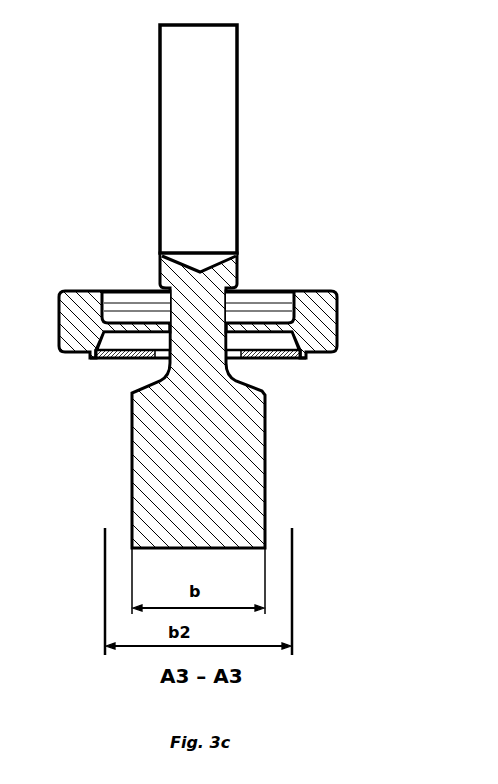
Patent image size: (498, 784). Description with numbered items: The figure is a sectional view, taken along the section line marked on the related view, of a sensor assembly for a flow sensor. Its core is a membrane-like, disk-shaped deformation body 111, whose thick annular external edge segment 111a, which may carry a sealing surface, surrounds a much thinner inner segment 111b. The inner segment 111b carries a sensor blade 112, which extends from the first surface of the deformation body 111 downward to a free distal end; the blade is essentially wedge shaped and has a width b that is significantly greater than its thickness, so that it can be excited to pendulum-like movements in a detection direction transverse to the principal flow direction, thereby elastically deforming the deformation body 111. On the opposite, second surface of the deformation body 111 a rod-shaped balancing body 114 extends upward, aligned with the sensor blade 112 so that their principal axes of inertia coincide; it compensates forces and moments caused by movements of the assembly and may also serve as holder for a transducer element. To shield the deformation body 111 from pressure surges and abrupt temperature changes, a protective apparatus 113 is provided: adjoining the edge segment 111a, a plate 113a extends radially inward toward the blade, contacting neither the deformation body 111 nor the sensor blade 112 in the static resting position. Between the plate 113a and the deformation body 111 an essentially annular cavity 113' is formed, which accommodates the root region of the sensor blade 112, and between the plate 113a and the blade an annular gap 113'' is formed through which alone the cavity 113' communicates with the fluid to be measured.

The balancing body 114 is at (140, 115).
The deformation body 111 is at (207, 321).
The external edge segment 111a is at (72, 300).
The inner segment 111b is at (127, 323).
The sensor blade 112 is at (270, 452).
The protective apparatus 113 is at (325, 369).
The cavity 113' is at (268, 383).
The gap 113'' is at (126, 389).
The plate 113a is at (110, 358).